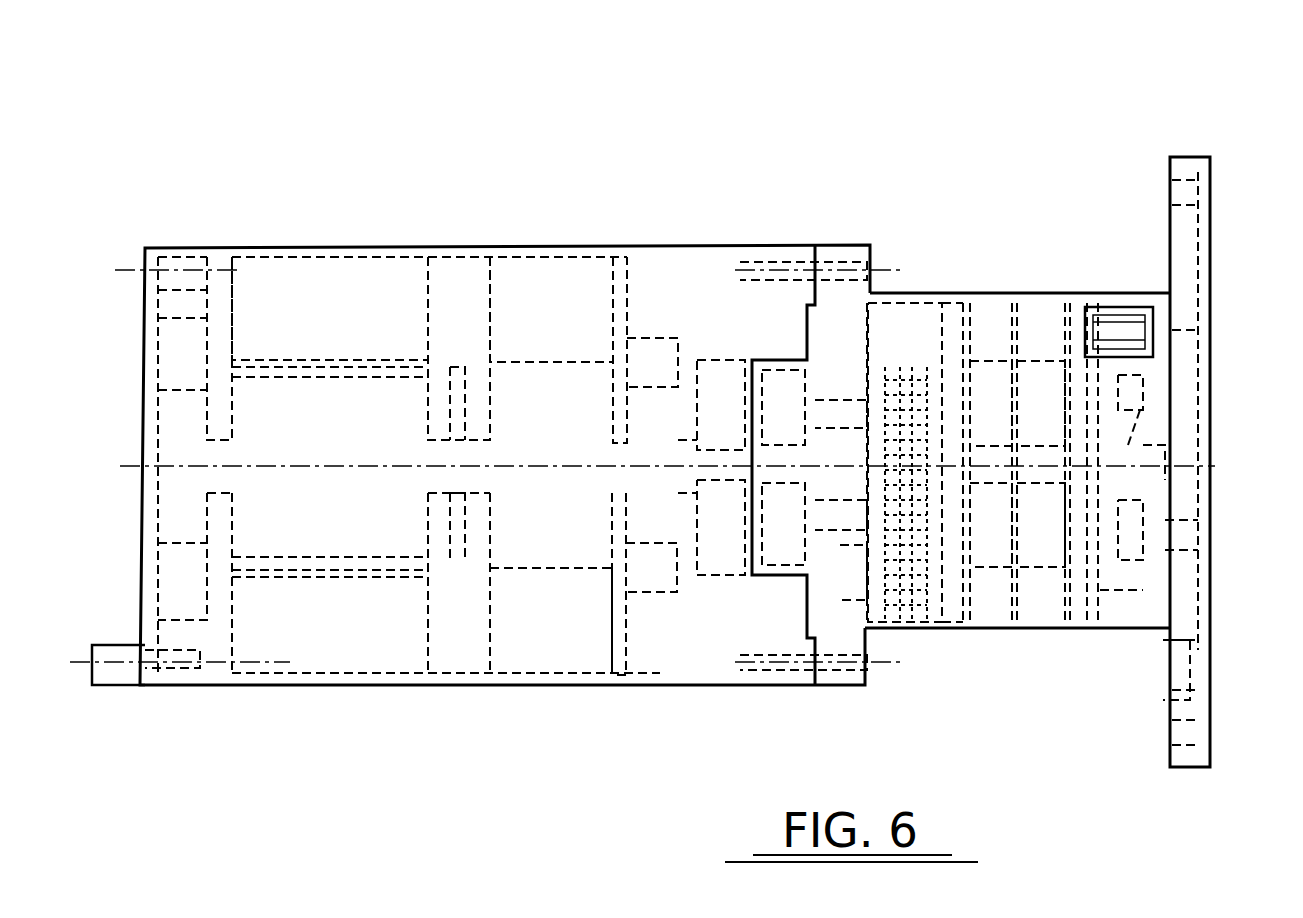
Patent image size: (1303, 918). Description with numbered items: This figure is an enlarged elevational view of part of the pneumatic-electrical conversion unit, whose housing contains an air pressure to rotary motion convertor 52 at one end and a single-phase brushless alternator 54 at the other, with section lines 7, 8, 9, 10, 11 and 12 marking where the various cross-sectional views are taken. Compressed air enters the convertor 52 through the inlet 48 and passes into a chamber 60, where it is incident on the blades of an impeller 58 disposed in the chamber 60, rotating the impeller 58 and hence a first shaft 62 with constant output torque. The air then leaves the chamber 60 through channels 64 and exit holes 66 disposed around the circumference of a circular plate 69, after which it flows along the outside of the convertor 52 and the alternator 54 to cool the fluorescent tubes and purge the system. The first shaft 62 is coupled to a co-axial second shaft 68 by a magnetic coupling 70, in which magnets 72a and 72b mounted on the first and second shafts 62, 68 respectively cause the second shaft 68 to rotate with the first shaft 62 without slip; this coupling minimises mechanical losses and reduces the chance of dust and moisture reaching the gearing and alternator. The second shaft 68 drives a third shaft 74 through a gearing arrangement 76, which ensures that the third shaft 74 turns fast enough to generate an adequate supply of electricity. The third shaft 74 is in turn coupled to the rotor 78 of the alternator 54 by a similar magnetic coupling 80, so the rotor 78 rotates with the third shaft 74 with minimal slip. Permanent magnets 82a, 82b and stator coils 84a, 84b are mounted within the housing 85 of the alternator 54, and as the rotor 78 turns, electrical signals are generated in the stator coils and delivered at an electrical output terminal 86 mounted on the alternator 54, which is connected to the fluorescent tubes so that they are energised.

The section line 7— 7 is at (1162, 880).
The section line 8— 8 is at (1152, 757).
The section line 9— 9 is at (1080, 723).
The section line 10— 10 is at (633, 770).
The section line 11— 11 is at (495, 790).
The section line 12— 12 is at (430, 818).
The inlet 48 is at (1155, 333).
The air pressure to rotary motion convertor 52 is at (1000, 215).
The alternator 54 is at (665, 238).
The impeller 58 is at (1142, 395).
The chamber 60 is at (1177, 540).
The first shaft 62 is at (1143, 443).
The channels 64 is at (1253, 615).
The exit holes 66 is at (1163, 690).
The second shaft 68 is at (980, 482).
The circular plate 69 is at (1210, 157).
The magnetic coupling 70 is at (983, 293).
The magnet 72a is at (1050, 310).
The magnet 72b is at (968, 312).
The third shaft 74 is at (812, 487).
The gearing arrangement 76 is at (905, 625).
The rotor 78 is at (353, 455).
The magnetic coupling 80 is at (746, 585).
The permanent magnet 82a is at (597, 327).
The permanent magnet 82b is at (533, 628).
The stator coil 84a is at (363, 328).
The stator coil 84b is at (304, 630).
The housing 85 is at (515, 247).
The electrical output terminal 86 is at (119, 667).